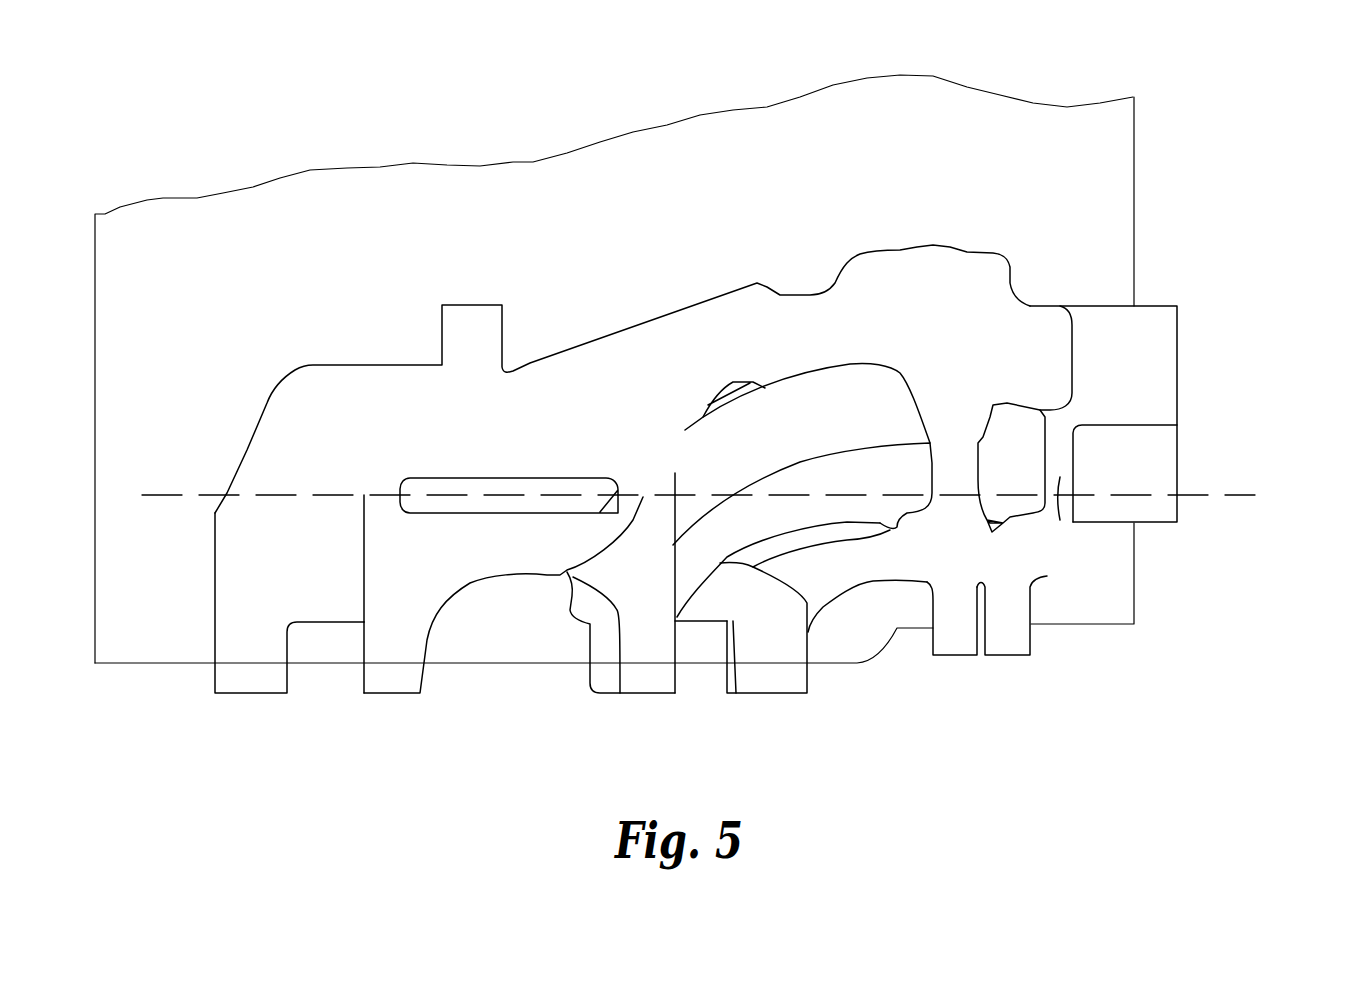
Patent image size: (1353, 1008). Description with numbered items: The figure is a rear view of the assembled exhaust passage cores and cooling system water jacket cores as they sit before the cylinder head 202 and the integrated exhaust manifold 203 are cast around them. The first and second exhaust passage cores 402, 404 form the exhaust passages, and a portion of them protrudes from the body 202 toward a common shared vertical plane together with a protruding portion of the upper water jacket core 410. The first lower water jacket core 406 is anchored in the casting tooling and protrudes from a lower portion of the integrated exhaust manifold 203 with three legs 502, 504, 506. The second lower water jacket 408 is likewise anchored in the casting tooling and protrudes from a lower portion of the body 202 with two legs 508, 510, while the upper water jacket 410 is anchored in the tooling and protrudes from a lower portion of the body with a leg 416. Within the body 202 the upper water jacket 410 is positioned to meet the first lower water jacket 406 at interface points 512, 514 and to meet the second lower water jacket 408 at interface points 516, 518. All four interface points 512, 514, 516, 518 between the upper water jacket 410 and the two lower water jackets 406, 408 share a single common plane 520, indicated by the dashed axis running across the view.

The cylinder head 202 is at (182, 267).
The integrated exhaust manifold 203 is at (1053, 160).
The first exhaust passage core 402 is at (1206, 473).
The second exhaust passage core 404 is at (1163, 468).
The first lower water jacket core 406 is at (380, 633).
The second lower water jacket core 408 is at (1038, 533).
The upper water jacket core 410 is at (1135, 335).
The leg 416 is at (235, 693).
The leg 502 is at (373, 693).
The leg 504 is at (650, 693).
The leg 506 is at (760, 693).
The leg 508 is at (953, 653).
The leg 510 is at (1007, 655).
The interface point 512 is at (387, 495).
The interface point 514 is at (567, 572).
The interface point 516 is at (953, 497).
The interface point 518 is at (1060, 477).
The common plane 520 is at (168, 495).